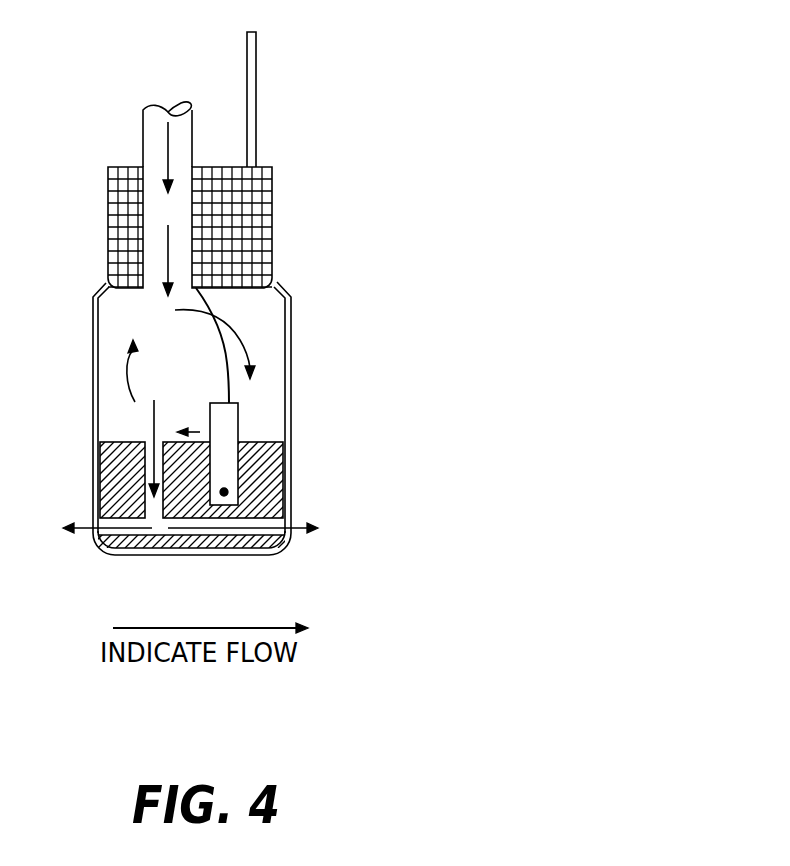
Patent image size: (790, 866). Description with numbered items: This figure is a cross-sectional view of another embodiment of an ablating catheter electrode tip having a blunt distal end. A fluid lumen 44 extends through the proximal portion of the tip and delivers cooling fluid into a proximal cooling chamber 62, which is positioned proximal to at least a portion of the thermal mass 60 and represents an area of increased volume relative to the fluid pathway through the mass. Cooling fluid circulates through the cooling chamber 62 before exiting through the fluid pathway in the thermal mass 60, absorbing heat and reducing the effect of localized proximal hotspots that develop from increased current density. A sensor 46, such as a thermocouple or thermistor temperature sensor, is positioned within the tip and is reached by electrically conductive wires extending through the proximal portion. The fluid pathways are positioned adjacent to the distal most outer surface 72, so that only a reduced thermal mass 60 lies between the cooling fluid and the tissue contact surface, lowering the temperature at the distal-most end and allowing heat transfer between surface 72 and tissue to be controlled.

The fluid lumen 44 is at (143, 145).
The proximal cooling chamber 62 is at (172, 350).
The sensor 46 is at (232, 430).
The thermal mass 60 is at (262, 483).
The distal most outer surface 72 is at (252, 553).